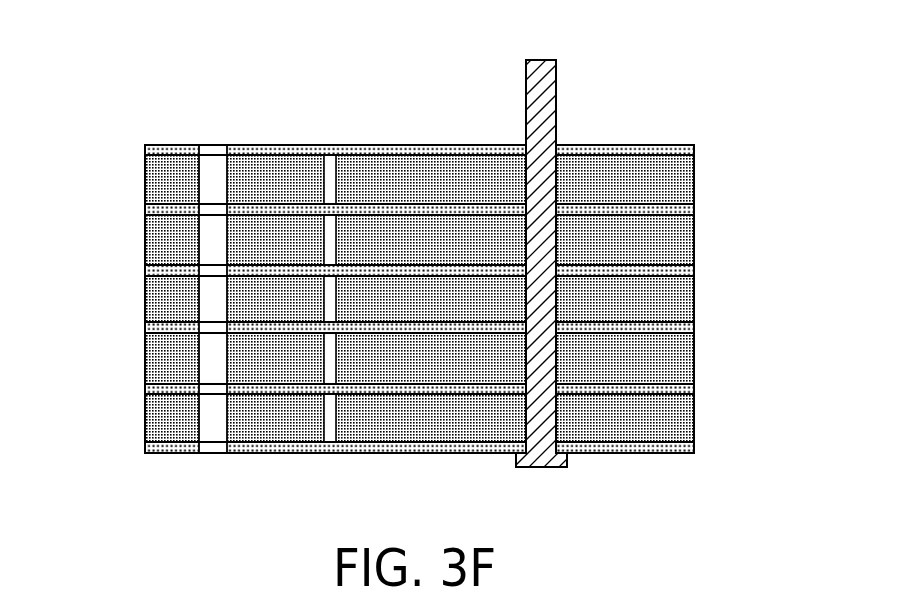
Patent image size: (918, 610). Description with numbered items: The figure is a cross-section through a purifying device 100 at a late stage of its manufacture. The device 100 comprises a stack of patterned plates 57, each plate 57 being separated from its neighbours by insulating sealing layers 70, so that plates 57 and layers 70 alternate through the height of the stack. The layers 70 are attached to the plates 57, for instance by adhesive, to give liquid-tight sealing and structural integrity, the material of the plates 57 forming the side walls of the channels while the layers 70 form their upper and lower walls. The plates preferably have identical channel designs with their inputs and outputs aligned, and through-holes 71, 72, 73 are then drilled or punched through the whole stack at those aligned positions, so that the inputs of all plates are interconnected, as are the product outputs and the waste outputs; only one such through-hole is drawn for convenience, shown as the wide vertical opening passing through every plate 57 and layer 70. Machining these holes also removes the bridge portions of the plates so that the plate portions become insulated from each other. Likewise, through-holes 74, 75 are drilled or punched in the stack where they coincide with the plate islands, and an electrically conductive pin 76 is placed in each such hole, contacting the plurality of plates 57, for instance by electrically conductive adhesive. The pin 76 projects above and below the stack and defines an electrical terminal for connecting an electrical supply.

The purifying device 100 is at (128, 72).
The patterned plate 57 is at (672, 163).
The insulating sealing layer 70 is at (670, 203).
The through-hole 71 is at (248, 270).
The through-hole 72 is at (248, 270).
The through-hole 73 is at (200, 158).
The through-hole 74 is at (519, 263).
The through-hole 75 is at (534, 178).
The electrically conductive pin 76 is at (533, 263).